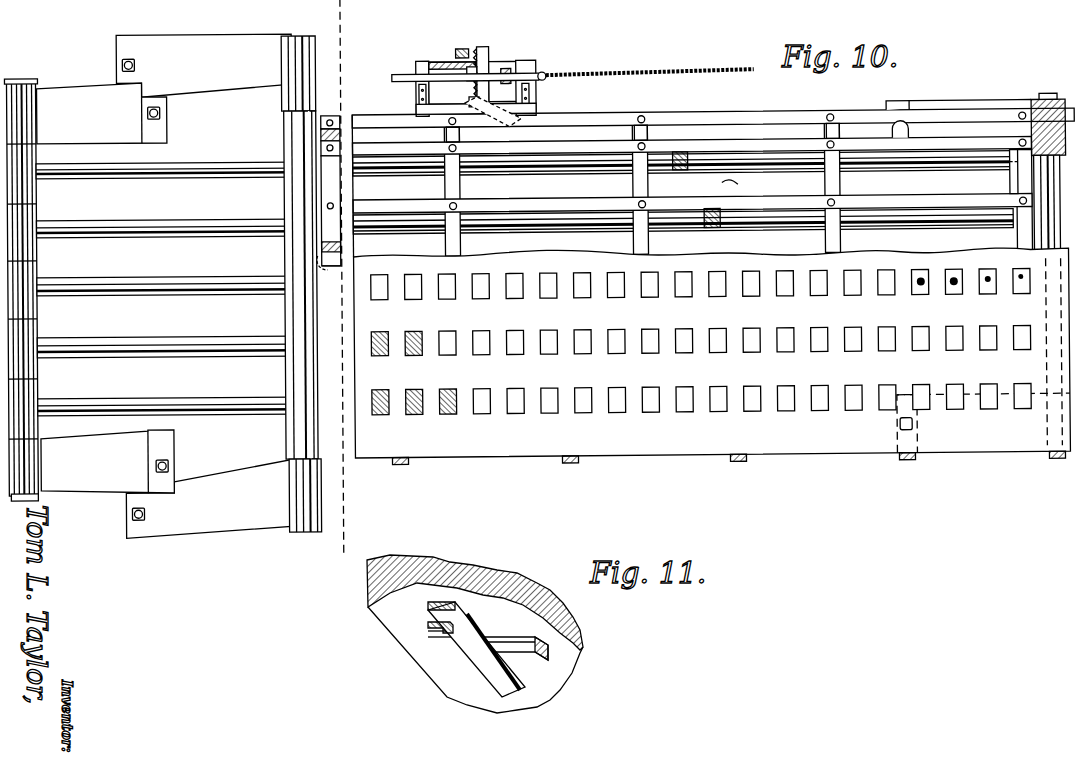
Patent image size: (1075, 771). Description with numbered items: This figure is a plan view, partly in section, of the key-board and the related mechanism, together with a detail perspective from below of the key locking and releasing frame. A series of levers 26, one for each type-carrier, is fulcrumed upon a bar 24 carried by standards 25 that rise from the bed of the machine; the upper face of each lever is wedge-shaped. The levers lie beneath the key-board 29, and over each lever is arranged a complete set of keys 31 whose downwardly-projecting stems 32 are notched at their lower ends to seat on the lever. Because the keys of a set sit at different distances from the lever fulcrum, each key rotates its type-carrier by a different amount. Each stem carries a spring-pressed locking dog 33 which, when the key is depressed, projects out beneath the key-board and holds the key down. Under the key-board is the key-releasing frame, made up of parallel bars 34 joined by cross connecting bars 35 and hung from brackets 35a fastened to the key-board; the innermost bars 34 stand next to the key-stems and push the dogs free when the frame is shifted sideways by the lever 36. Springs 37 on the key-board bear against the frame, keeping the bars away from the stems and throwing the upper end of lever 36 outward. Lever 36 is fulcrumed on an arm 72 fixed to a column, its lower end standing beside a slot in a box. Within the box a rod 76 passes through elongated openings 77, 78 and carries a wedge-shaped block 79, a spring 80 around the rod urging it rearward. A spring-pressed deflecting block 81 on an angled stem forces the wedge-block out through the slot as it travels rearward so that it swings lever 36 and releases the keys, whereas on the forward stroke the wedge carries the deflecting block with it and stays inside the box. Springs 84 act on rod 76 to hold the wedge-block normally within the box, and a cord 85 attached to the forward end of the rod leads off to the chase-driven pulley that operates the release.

In FIG. 10, the bar 24 is at (48, 79).
In FIG. 10, the standards 25 is at (105, 288).
In FIG. 10, the levers 26 is at (203, 176).
In FIG. 10, the key-board 29 is at (652, 278).
In FIG. 11, the key-board 29 is at (557, 684).
In FIG. 10, the keys 31 is at (612, 284).
In FIG. 10, the stems 32 is at (721, 212).
In FIG. 10, the locking dog 33 is at (688, 160).
In FIG. 10, the parallel bars 34 is at (668, 142).
In FIG. 11, the parallel bars 34 is at (525, 655).
In FIG. 10, the cross connecting bars 35 is at (445, 190).
In FIG. 11, the cross connecting bars 35 is at (497, 676).
In FIG. 11, the brackets 35a is at (458, 642).
In FIG. 10, the lever 36 is at (489, 60).
In FIG. 10, the springs 37 is at (395, 466).
In FIG. 10, the arm 72 is at (467, 50).
In FIG. 10, the rod 76 is at (445, 62).
In FIG. 10, the elongated opening 77 is at (419, 64).
In FIG. 10, the elongated opening 78 is at (541, 75).
In FIG. 10, the wedge-shaped block 79 is at (500, 78).
In FIG. 10, the spring 80 is at (514, 67).
In FIG. 10, the deflecting block 81 is at (473, 101).
In FIG. 10, the springs 84 is at (418, 76).
In FIG. 10, the cord 85 is at (628, 73).